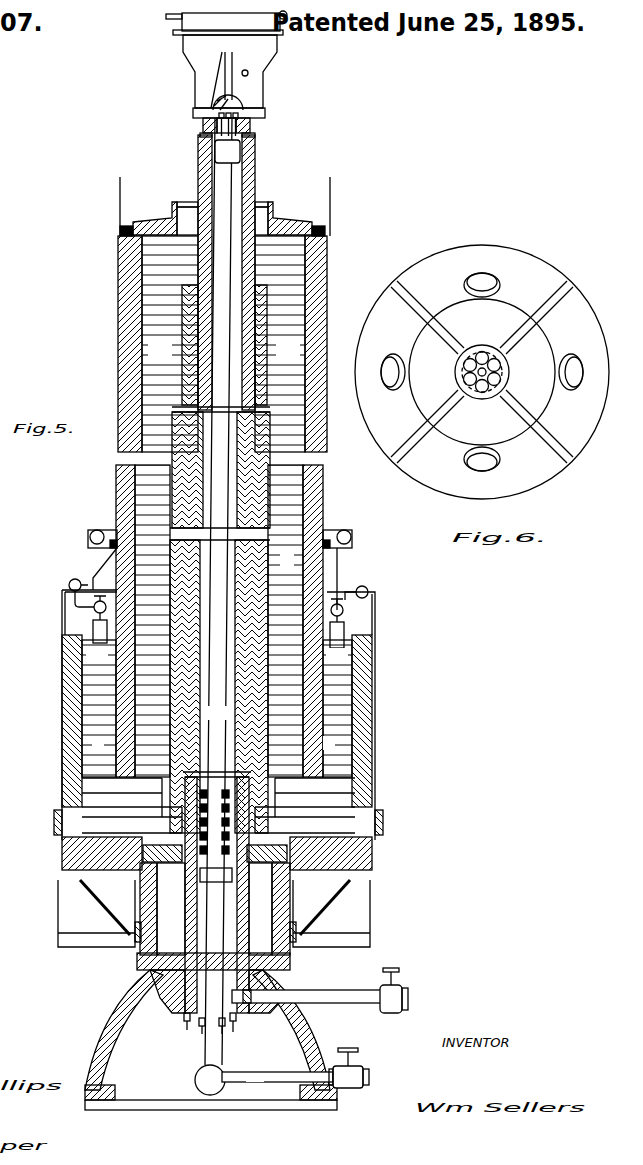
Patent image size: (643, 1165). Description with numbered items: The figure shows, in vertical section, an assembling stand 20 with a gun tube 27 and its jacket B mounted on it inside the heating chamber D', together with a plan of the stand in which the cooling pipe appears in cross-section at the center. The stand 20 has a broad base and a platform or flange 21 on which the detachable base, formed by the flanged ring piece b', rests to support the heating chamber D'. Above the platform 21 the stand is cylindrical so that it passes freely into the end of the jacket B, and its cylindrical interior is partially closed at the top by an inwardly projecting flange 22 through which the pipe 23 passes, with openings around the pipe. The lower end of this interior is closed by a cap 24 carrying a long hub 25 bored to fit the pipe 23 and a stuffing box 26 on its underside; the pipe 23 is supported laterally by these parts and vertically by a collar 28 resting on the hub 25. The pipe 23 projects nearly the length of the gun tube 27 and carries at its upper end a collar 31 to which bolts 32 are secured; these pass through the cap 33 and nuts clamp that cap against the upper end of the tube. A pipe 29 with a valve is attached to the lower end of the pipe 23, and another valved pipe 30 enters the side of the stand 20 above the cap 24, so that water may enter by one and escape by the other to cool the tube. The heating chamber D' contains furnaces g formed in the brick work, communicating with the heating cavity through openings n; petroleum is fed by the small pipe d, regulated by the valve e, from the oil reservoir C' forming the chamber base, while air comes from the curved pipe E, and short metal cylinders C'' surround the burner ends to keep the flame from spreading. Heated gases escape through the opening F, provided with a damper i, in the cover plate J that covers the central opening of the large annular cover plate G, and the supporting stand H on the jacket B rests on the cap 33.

In FIG. 5, the assembling stand 20 is at (160, 990).
In FIG. 6, the assembling stand 20 is at (482, 372).
In FIG. 5, the platform or flange 21 is at (137, 963).
In FIG. 6, the platform or flange 21 is at (482, 372).
In FIG. 5, the inwardly projecting flange 22 is at (185, 781).
In FIG. 6, the inwardly projecting flange 22 is at (482, 373).
In FIG. 5, the pipe 23 is at (218, 591).
In FIG. 5, the cap 24 is at (188, 1027).
In FIG. 5, the long hub 25 is at (200, 903).
In FIG. 5, the stuffing box 26 is at (233, 1033).
In FIG. 5, the gun tube 27 is at (250, 266).
In FIG. 5, the collar 28 is at (232, 876).
In FIG. 5, the pipe 29 is at (282, 1071).
In FIG. 5, the pipe 30 is at (320, 990).
In FIG. 5, the collar 31 is at (227, 151).
In FIG. 5, the bolts 32 is at (256, 135).
In FIG. 5, the cap 33 is at (250, 124).
In FIG. 5, the supporting stand H is at (230, 76).
In FIG. 5, the annular cover plate J is at (230, 17).
In FIG. 5, the butterfly damper i is at (169, 16).
In FIG. 5, the opening F is at (258, 203).
In FIG. 5, the annular cover plate G is at (222, 219).
In FIG. 5, the heating chamber D' is at (224, 352).
In FIG. 5, the jacket B is at (270, 560).
In FIG. 5, the curved air pipe E is at (220, 561).
In FIG. 5, the oil pipe d is at (69, 583).
In FIG. 5, the valve e is at (218, 621).
In FIG. 5, the short metal cylinder C'' is at (218, 730).
In FIG. 5, the furnace g is at (217, 730).
In FIG. 5, the openings n is at (218, 820).
In FIG. 5, the flanged ring piece b' is at (215, 909).
In FIG. 5, the oil reservoir C' is at (214, 913).